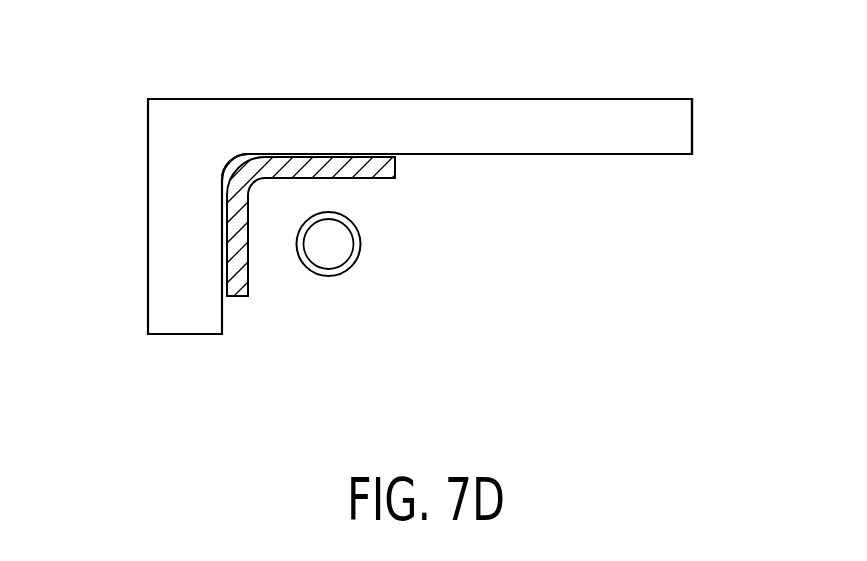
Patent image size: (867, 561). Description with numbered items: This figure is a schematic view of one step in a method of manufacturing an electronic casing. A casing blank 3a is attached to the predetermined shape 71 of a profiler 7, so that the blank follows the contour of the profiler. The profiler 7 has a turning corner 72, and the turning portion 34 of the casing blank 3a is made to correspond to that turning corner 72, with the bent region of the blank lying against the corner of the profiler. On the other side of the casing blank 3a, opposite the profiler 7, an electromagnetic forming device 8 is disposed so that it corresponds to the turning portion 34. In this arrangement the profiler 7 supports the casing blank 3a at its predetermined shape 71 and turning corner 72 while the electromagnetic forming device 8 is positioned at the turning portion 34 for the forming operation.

The casing blank 3a is at (236, 331).
The profiler 7 is at (498, 100).
The predetermined shape 71 is at (573, 154).
The turning corner 72 is at (219, 155).
The turning portion 34 is at (259, 188).
The electromagnetic forming device 8 is at (361, 240).